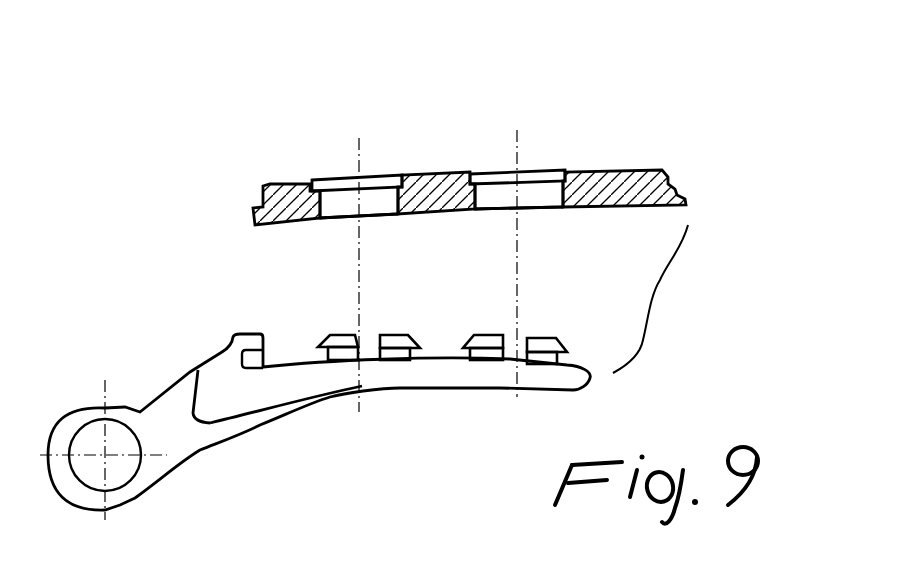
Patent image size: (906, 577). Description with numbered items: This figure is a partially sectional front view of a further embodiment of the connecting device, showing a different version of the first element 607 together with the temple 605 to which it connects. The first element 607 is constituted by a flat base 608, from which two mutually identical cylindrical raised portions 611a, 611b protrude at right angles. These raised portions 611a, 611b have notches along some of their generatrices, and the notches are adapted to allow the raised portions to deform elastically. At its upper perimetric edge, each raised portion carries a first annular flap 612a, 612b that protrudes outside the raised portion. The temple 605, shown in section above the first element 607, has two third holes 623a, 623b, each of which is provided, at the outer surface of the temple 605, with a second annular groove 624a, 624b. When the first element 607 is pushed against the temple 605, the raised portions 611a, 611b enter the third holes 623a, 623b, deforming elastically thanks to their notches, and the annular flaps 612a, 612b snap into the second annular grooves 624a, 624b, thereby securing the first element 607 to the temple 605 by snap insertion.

The temple 605 is at (640, 175).
The first element 607 is at (190, 217).
The flat base 608 is at (403, 390).
The cylindrical raised portion 611a is at (335, 330).
The cylindrical raised portion 611b is at (551, 330).
The first annular flap 612a is at (387, 335).
The first annular flap 612b is at (488, 335).
The third hole 623a is at (372, 205).
The third hole 623b is at (538, 193).
The second annular groove 624a is at (326, 175).
The second annular groove 624b is at (501, 173).